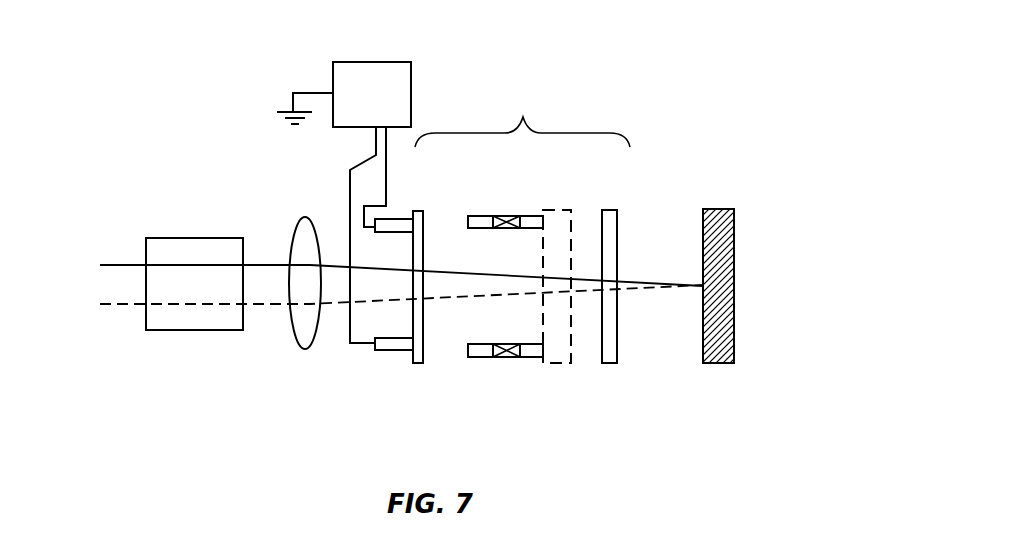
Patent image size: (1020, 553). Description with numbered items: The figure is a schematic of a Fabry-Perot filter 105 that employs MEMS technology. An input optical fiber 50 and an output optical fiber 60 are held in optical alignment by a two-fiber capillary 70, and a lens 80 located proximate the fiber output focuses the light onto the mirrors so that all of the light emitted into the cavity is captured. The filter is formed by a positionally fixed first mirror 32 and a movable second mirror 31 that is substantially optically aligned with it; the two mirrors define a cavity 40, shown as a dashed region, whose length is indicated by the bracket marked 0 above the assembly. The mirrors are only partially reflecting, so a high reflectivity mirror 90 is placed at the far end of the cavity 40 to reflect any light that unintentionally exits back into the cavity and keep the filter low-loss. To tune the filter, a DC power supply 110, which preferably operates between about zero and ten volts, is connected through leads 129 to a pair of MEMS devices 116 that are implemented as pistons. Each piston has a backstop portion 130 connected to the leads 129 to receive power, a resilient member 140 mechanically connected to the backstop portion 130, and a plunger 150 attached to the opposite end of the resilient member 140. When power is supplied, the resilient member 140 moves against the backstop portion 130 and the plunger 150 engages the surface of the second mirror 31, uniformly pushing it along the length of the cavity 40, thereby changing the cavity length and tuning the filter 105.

The Fabry-Perot filter 105 is at (578, 48).
The modulator assembly 0 is at (522, 117).
The DC power supply 110 is at (372, 62).
The leads 129 is at (351, 184).
The backstop portion 130 is at (376, 233).
The MEMS devices 116 is at (393, 218).
The second mirror 31 is at (418, 364).
The two-fiber capillary 70 is at (178, 238).
The input optical fiber 50 is at (121, 265).
The output optical fiber 60 is at (120, 304).
The lens 80 is at (305, 349).
The plunger 150 is at (500, 215).
The resilient member 140 is at (510, 229).
The cavity 40 is at (572, 218).
The first mirror 32 is at (612, 363).
The high reflectivity mirror 90 is at (734, 222).